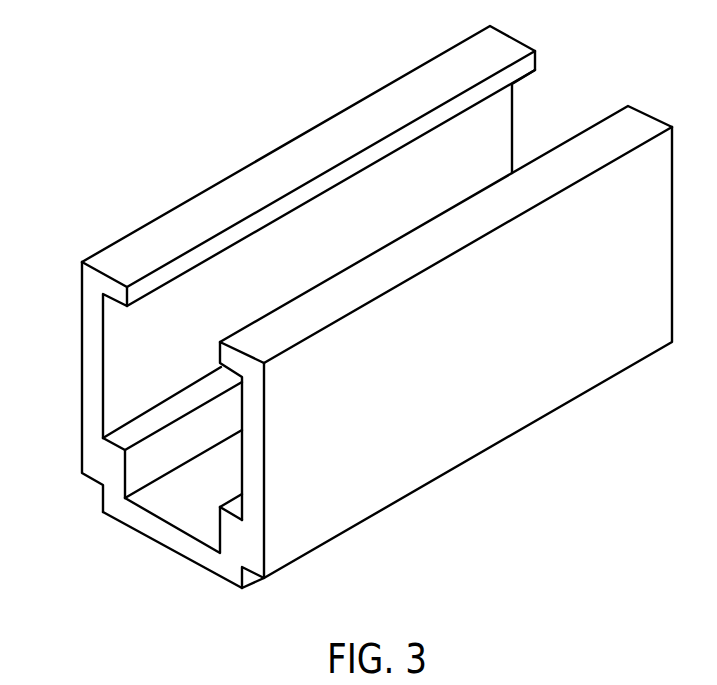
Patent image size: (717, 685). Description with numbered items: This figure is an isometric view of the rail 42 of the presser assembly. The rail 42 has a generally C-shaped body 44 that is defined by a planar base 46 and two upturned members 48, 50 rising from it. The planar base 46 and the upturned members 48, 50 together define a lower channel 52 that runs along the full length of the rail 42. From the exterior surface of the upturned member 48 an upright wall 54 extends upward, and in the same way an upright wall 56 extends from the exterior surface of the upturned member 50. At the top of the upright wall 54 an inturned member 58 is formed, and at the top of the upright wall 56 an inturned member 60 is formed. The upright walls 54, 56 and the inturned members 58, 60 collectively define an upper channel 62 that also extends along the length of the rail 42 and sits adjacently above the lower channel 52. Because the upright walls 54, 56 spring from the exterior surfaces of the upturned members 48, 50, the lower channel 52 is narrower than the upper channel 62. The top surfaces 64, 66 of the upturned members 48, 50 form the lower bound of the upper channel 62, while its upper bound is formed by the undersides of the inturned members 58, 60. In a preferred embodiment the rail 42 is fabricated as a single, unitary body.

The rail 42 is at (166, 118).
The C-shaped body 44 is at (43, 298).
The planar base 46 is at (193, 552).
The upturned member 48 is at (145, 467).
The upturned member 50 is at (219, 530).
The lower channel 52 is at (193, 498).
The upright wall 54 is at (93, 366).
The upright wall 56 is at (410, 437).
The inturned member 58 is at (157, 242).
The inturned member 60 is at (272, 337).
The upper channel 62 is at (558, 122).
The top surface 64 is at (133, 432).
The top surface 66 is at (228, 505).